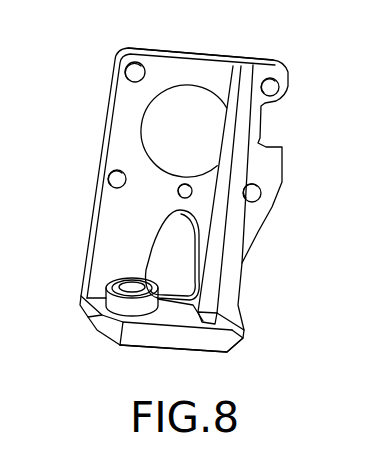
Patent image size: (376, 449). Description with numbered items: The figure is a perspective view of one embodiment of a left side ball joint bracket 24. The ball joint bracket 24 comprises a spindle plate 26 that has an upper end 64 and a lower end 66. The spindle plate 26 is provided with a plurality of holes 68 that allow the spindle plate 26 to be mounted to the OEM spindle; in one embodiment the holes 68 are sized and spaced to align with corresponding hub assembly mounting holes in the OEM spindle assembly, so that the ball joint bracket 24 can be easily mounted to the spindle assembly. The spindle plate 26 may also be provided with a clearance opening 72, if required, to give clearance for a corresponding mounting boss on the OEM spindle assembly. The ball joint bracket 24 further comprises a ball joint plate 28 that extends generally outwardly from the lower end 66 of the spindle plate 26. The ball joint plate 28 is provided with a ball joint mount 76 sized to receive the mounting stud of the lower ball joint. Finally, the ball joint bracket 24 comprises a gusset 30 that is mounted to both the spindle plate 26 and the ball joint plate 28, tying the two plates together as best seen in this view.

The ball joint bracket 24 is at (86, 96).
The spindle plate 26 is at (97, 211).
The ball joint plate 28 is at (246, 340).
The gusset 30 is at (223, 267).
The upper end 64 is at (204, 57).
The lower end 66 is at (81, 291).
The holes 68 is at (129, 64).
The clearance opening 72 is at (143, 266).
The ball joint mount 76 is at (110, 279).